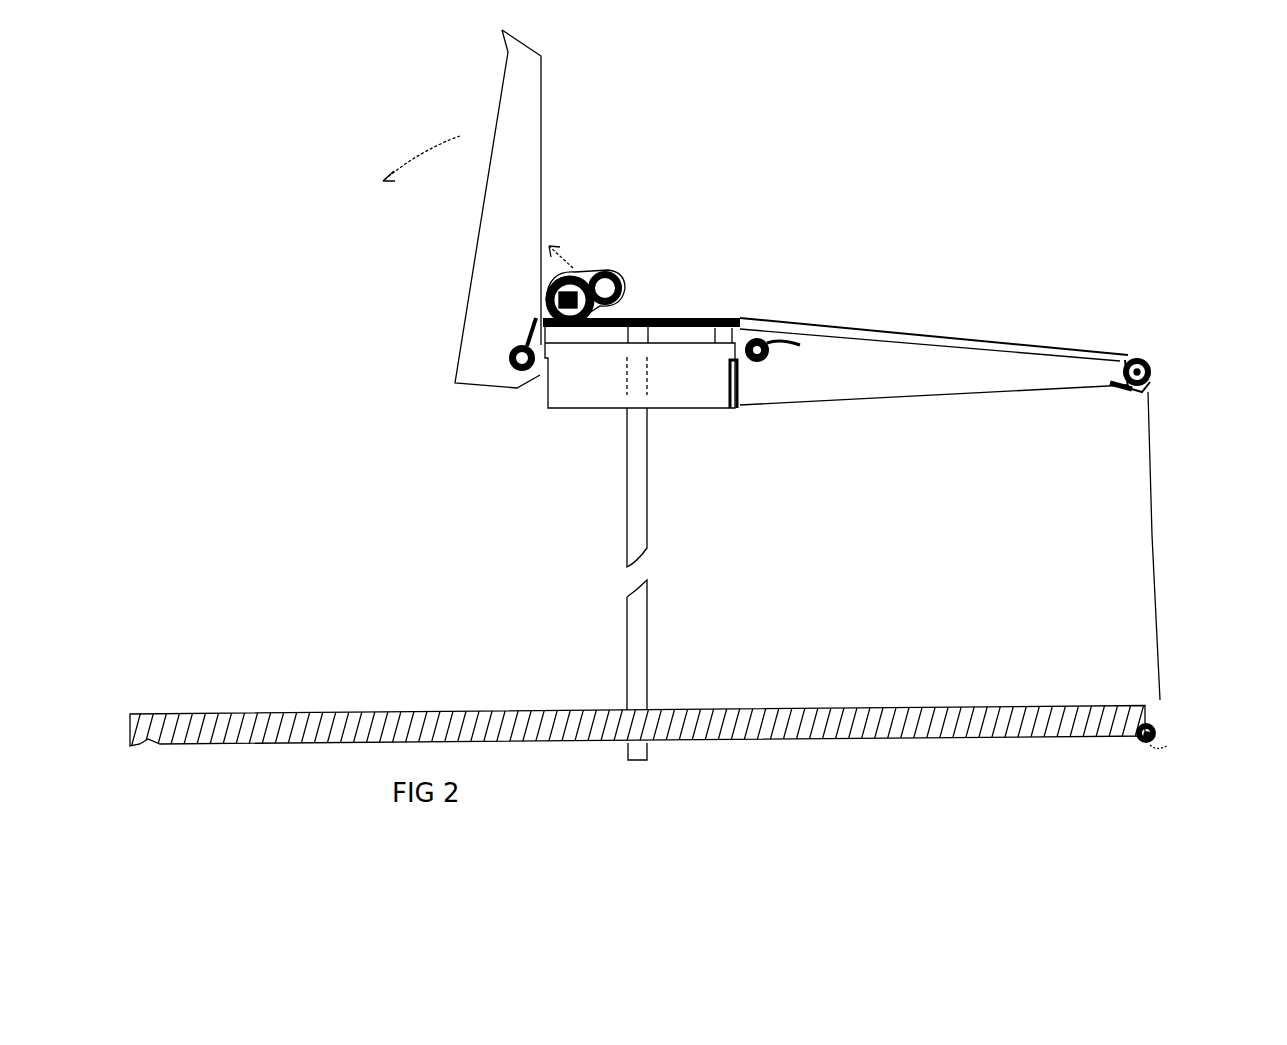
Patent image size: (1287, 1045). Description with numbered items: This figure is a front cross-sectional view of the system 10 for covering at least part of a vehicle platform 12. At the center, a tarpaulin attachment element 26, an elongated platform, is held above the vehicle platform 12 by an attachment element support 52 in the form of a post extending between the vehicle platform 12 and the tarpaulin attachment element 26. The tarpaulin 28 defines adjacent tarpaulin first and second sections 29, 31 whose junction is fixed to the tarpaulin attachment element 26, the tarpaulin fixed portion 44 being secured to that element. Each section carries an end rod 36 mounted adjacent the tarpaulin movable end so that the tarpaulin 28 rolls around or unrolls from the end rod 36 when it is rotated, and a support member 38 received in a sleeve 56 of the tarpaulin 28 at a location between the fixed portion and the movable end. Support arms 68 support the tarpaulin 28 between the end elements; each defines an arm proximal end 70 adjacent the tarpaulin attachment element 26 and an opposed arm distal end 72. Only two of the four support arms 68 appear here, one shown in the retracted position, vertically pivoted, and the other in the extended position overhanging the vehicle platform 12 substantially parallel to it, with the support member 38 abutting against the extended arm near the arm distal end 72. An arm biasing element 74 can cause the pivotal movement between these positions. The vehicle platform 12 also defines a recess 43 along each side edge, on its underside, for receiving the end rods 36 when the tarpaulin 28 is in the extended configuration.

The system 10 is at (1163, 185).
The vehicle platform 12 is at (820, 714).
The tarpaulin attachment element 26 is at (600, 412).
The tarpaulin 28 is at (1154, 537).
The tarpaulin first section 29 is at (1018, 343).
The tarpaulin second section 31 is at (577, 275).
The end rod 36 is at (578, 302).
The support member 38 is at (610, 279).
The recess 43 is at (1136, 728).
The tarpaulin fixed portion 44 is at (542, 463).
The attachment element support 52 is at (637, 493).
The sleeve 56 is at (598, 278).
The support arm 68 is at (918, 396).
The arm proximal end 70 is at (735, 372).
The arm distal end 72 is at (1130, 390).
The arm biasing element 74 is at (763, 338).